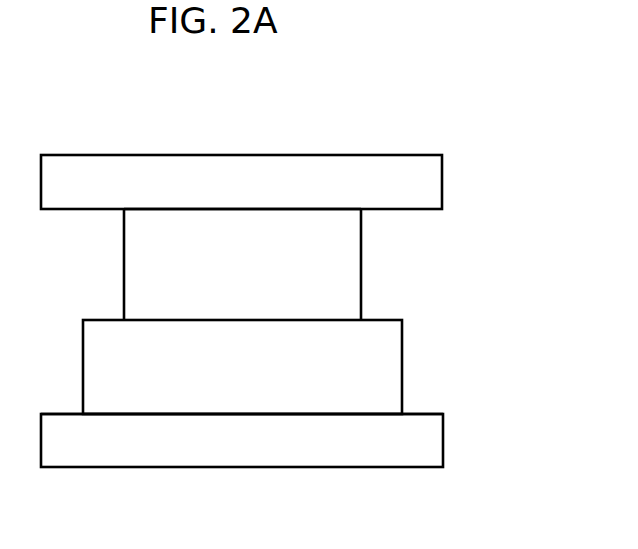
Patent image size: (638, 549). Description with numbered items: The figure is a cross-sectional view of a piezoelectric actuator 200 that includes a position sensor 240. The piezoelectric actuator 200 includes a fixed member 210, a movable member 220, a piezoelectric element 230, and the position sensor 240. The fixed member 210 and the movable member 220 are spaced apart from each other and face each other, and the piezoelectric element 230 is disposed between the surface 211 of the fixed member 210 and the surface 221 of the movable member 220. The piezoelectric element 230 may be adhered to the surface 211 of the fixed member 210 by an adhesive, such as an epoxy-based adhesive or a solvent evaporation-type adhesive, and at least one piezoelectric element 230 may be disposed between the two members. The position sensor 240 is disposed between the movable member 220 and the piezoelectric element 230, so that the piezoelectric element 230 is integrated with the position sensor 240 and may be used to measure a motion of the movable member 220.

The piezoelectric actuator 200 is at (263, 118).
The fixed member 210 is at (430, 443).
The surface of the fixed member 211 is at (437, 414).
The movable member 220 is at (423, 178).
The surface of the movable member 221 is at (413, 209).
The piezoelectric element 230 is at (390, 346).
The position sensor 240 is at (350, 273).